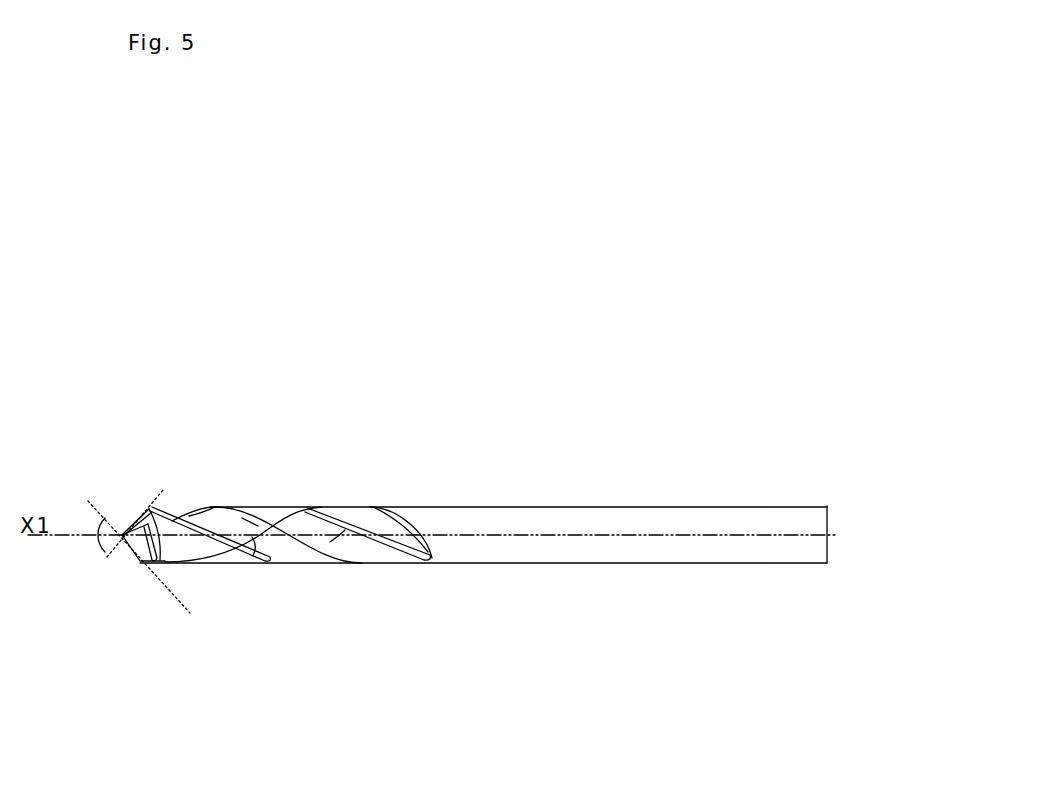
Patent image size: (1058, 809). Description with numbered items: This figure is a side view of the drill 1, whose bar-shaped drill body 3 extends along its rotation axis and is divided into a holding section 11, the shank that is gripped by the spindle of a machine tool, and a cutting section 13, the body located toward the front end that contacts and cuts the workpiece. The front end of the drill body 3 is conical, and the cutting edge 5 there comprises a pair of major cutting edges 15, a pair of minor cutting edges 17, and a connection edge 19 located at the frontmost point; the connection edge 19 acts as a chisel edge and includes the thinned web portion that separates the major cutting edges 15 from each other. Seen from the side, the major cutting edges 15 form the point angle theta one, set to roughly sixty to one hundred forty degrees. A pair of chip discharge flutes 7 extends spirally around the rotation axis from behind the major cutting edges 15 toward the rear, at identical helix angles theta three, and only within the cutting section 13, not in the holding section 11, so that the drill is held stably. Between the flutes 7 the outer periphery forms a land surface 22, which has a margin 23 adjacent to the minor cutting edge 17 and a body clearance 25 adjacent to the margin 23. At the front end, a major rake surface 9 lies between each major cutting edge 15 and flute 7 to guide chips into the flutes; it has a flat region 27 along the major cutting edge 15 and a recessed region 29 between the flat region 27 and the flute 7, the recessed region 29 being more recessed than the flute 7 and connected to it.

The drill 1 is at (612, 448).
The drill body 3 is at (427, 556).
The cutting edge 5 is at (96, 508).
The chip discharge flute 7 is at (166, 550).
The major rake surface 9 is at (177, 669).
The holding section 11 is at (822, 577).
The cutting section 13 is at (462, 577).
The major cutting edge 15 is at (145, 508).
The minor cutting edge 17 is at (242, 518).
The connection edge 19 is at (121, 534).
The land surface 22 is at (478, 676).
The margin 23 is at (209, 509).
The body clearance 25 is at (189, 516).
The flat region 27 is at (137, 560).
The recessed region 29 is at (150, 561).